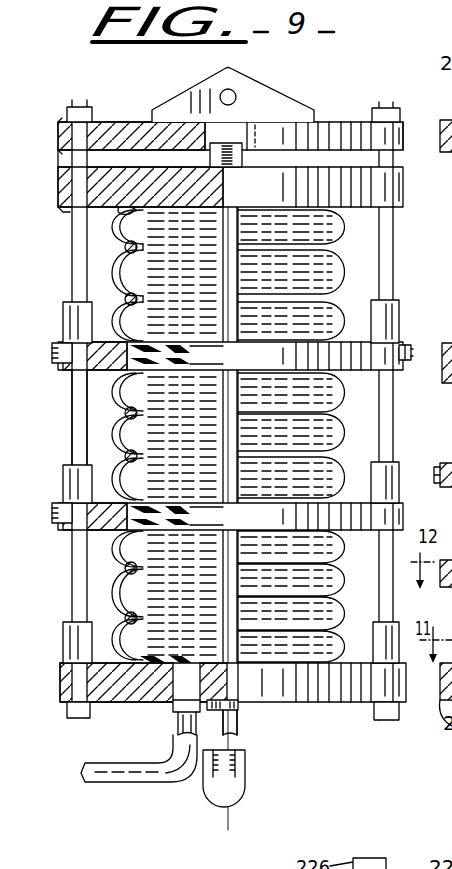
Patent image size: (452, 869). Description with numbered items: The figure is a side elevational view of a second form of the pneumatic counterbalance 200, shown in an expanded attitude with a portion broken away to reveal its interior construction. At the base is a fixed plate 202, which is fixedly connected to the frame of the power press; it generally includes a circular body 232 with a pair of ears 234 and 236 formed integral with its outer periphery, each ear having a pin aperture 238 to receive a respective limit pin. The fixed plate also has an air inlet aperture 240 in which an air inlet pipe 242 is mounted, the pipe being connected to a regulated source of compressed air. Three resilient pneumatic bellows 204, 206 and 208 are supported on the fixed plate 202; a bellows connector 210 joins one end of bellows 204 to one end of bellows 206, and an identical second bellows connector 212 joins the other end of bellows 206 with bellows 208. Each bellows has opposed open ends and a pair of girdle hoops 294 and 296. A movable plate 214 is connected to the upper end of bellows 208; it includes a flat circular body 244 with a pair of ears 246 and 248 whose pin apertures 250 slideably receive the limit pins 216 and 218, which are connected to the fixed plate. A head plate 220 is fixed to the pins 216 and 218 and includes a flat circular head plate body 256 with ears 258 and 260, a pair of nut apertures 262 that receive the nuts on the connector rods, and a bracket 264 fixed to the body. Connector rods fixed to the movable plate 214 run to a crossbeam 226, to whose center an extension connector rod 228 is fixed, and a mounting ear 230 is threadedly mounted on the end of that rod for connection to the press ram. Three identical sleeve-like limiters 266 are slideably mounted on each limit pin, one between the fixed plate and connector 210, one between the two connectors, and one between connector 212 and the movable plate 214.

The counterbalance 200 is at (345, 120).
The fixed plate 202 is at (306, 688).
The bellows 204 is at (349, 587).
The bellows 206 is at (344, 433).
The bellows 208 is at (341, 272).
The bellows connector 210 is at (57, 530).
The second bellows connector 212 is at (55, 366).
The movable plate 214 is at (60, 210).
The pin 216 is at (78, 382).
The pin 218 is at (384, 433).
The head plate 220 is at (63, 146).
The crossbeam 226 is at (238, 705).
The extension connector rod 228 is at (205, 753).
The mounting ear 230 is at (236, 796).
The circular body 232 is at (280, 695).
The ear 234 is at (67, 688).
The ear 236 is at (398, 687).
The pin aperture 238 is at (62, 676).
The air inlet aperture 240 is at (175, 697).
The air inlet pipe 242 is at (182, 773).
The flat circular body 244 is at (157, 177).
The ear 246 is at (58, 183).
The ear 248 is at (399, 190).
The pin aperture 250 is at (92, 198).
The head plate body 256 is at (293, 133).
The ear 258 is at (60, 133).
The ear 260 is at (399, 133).
The nut aperture 262 is at (233, 133).
The bracket 264 is at (188, 101).
The sleeve-like limiter 266 is at (78, 318).
The girdle hoop 294 is at (118, 580).
The girdle hoop 296 is at (133, 635).